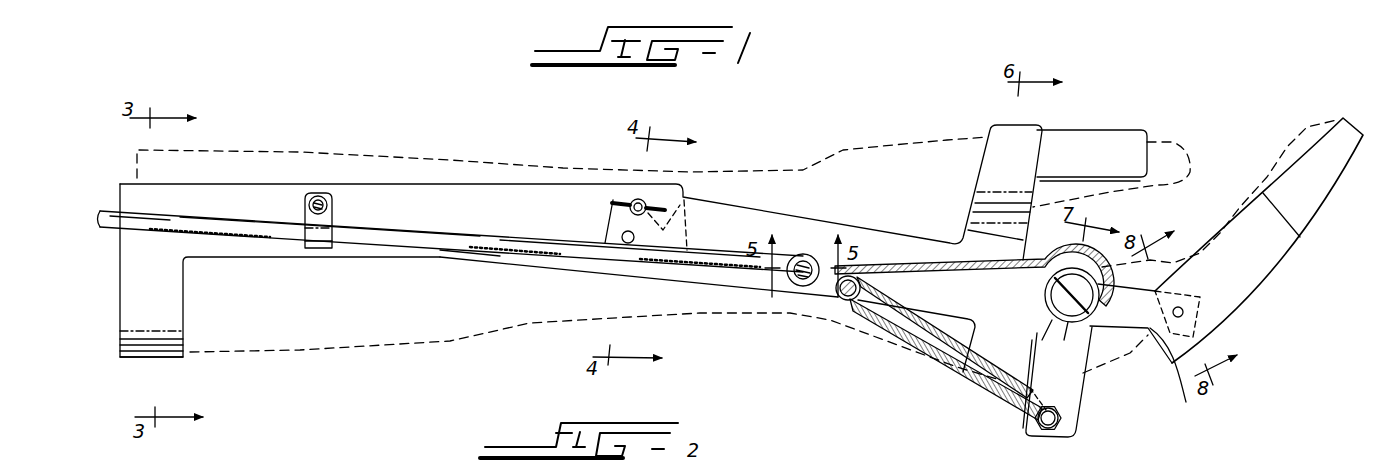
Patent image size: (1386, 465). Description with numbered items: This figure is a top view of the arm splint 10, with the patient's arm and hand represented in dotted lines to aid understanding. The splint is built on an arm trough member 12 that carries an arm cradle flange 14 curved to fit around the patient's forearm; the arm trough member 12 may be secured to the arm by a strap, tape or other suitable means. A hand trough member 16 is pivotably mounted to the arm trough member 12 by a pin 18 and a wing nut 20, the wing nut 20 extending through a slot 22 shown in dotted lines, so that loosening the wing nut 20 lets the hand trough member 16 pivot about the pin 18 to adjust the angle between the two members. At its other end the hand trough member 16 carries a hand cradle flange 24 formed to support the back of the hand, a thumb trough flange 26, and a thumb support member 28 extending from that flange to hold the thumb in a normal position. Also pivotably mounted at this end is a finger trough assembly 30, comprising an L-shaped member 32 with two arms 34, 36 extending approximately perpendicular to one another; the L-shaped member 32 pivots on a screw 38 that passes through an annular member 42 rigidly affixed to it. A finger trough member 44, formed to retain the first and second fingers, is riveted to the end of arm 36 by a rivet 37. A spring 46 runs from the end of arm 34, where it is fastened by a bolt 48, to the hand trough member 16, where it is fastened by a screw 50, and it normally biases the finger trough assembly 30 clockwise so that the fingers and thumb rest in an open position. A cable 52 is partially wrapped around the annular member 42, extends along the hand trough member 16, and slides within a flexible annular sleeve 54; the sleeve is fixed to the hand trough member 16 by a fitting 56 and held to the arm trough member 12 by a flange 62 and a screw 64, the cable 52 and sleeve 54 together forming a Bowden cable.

The arm splint 10 is at (982, 402).
The arm trough member 12 is at (430, 184).
The arm cradle flange 14 is at (173, 357).
The hand trough member 16 is at (815, 293).
The pin 18 is at (632, 244).
The wing nut 20 is at (634, 200).
The slot 22 is at (700, 198).
The hand cradle flange 24 is at (1003, 408).
The thumb trough flange 26 is at (1040, 124).
The thumb support member 28 is at (1105, 130).
The finger trough assembly 30 is at (1135, 353).
The L-shaped member 32 is at (1135, 284).
The arm 34 is at (1085, 382).
The arm 36 is at (1177, 375).
The rivet 37 is at (1185, 312).
The screw 38 is at (1044, 292).
The annular member 42 is at (1069, 324).
The finger trough member 44 is at (1270, 278).
The spring 46 is at (935, 367).
The bolt 48 is at (1062, 432).
The screw 50 is at (858, 300).
The cable 52 is at (1062, 262).
The flexible annular sleeve 54 is at (714, 266).
The fitting 56 is at (803, 254).
The flange 62 is at (330, 248).
The screw 64 is at (319, 195).